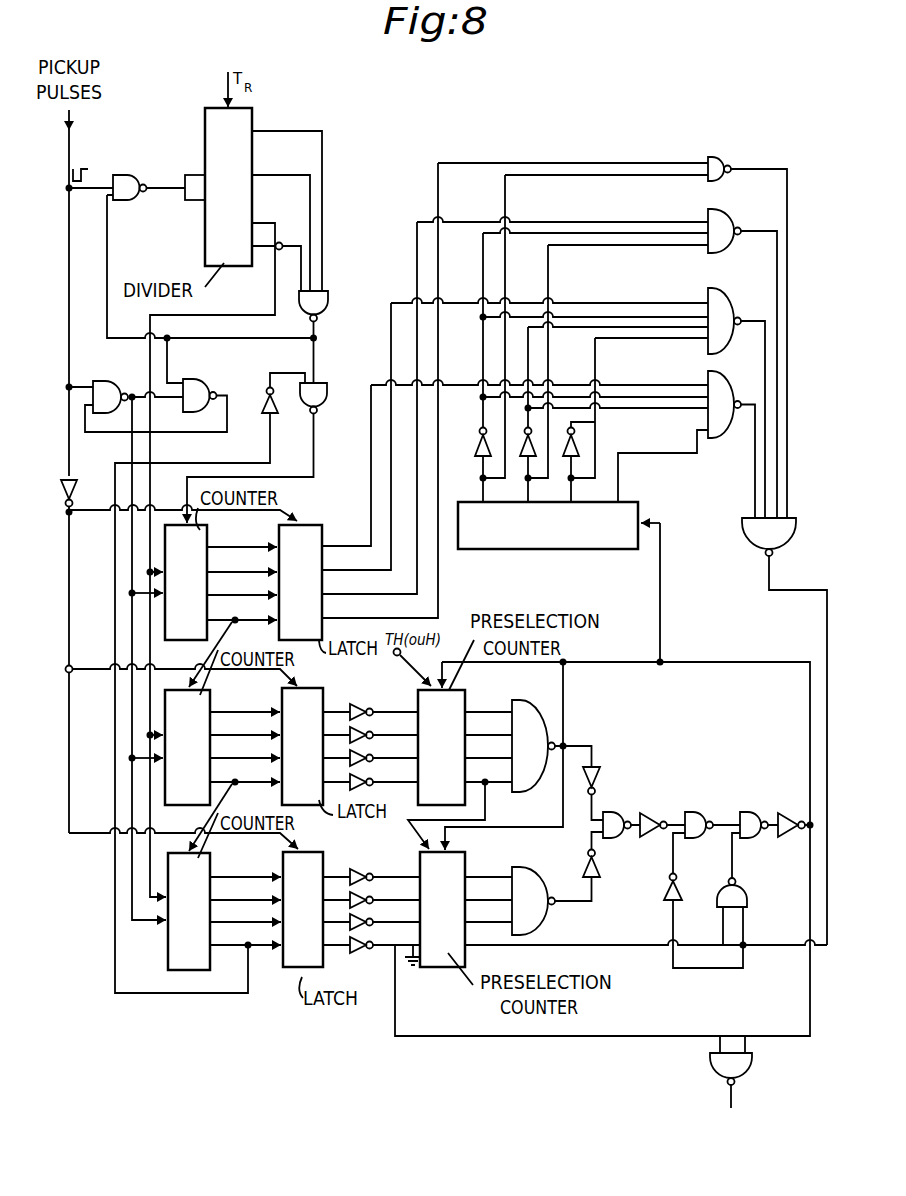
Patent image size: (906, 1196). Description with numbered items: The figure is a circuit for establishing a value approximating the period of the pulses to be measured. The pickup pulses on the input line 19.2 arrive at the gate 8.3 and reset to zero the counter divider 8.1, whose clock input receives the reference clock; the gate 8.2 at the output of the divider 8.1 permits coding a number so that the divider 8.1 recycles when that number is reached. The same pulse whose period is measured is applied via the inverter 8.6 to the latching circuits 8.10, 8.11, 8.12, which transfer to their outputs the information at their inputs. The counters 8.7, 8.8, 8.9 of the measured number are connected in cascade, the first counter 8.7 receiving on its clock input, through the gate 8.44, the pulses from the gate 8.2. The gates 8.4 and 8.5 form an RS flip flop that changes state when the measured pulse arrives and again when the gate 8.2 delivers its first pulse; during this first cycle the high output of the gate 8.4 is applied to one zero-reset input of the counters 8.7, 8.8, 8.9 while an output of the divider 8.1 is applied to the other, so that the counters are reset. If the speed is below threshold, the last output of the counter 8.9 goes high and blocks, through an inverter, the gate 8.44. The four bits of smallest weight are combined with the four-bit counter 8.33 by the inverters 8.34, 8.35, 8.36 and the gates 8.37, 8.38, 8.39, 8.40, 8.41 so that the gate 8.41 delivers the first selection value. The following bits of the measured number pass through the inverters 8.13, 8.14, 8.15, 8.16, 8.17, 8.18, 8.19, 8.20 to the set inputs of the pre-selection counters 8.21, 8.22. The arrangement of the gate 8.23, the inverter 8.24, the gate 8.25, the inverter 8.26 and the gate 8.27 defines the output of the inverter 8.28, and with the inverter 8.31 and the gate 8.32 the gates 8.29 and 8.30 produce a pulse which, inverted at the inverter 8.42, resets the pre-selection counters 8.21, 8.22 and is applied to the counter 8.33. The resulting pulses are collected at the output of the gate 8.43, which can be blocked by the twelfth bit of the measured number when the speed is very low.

The pickup pulse input line 19.2 is at (70, 156).
The counter divider 8.1 is at (253, 118).
The gate 8.2 is at (328, 300).
The gate 8.3 is at (133, 174).
The gate 8.4 is at (126, 362).
The gate 8.5 is at (205, 378).
The inverter 8.6 is at (76, 489).
The counter 8.7 is at (208, 537).
The counter 8.8 is at (208, 704).
The counter 8.9 is at (210, 870).
The latching circuit 8.10 is at (320, 523).
The latching circuit 8.11 is at (320, 699).
The latching circuit 8.12 is at (322, 860).
The inverter 8.13 is at (370, 709).
The inverter 8.14 is at (371, 738).
The inverter 8.15 is at (371, 761).
The inverter 8.16 is at (371, 784).
The inverter 8.17 is at (372, 874).
The inverter 8.18 is at (372, 897).
The inverter 8.19 is at (372, 920).
The inverter 8.20 is at (372, 943).
The pre-selection counter 8.21 is at (466, 698).
The pre-selection counter 8.22 is at (466, 868).
The gate 8.23 is at (526, 722).
The inverter 8.24 is at (600, 779).
The gate 8.25 is at (534, 884).
The inverter 8.26 is at (601, 869).
The gate 8.27 is at (604, 816).
The inverter 8.28 is at (648, 811).
The gate 8.29 is at (692, 814).
The gate 8.30 is at (750, 812).
The inverter 8.31 is at (680, 892).
The gate 8.32 is at (748, 898).
The counter 8.33 is at (472, 550).
The inverter 8.34 is at (579, 451).
The inverter 8.35 is at (521, 456).
The inverter 8.36 is at (477, 447).
The gate 8.37 is at (722, 152).
The gate 8.38 is at (728, 220).
The gate 8.39 is at (740, 289).
The gate 8.40 is at (740, 373).
The gate 8.41 is at (791, 531).
The inverter 8.42 is at (792, 806).
The gate 8.43 is at (746, 1068).
The gate 8.44 is at (327, 401).